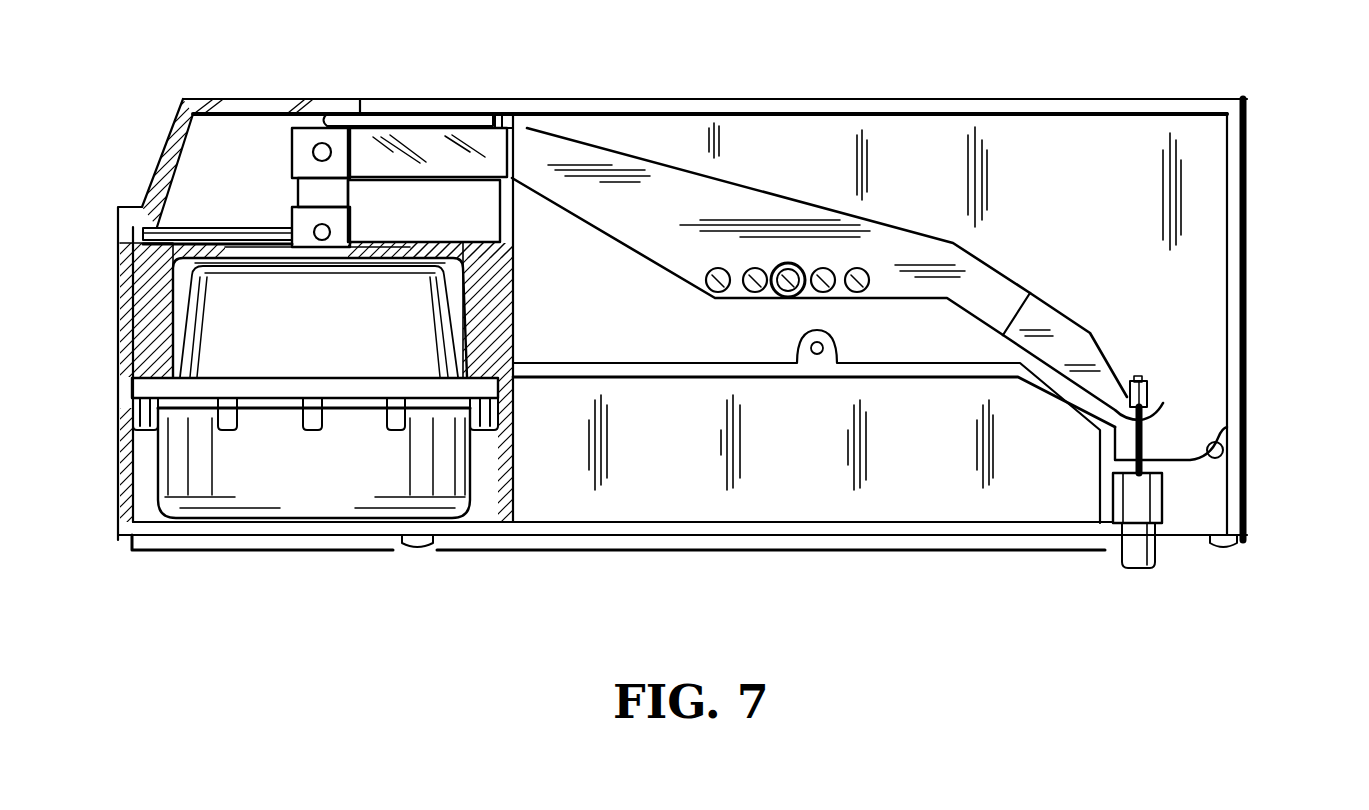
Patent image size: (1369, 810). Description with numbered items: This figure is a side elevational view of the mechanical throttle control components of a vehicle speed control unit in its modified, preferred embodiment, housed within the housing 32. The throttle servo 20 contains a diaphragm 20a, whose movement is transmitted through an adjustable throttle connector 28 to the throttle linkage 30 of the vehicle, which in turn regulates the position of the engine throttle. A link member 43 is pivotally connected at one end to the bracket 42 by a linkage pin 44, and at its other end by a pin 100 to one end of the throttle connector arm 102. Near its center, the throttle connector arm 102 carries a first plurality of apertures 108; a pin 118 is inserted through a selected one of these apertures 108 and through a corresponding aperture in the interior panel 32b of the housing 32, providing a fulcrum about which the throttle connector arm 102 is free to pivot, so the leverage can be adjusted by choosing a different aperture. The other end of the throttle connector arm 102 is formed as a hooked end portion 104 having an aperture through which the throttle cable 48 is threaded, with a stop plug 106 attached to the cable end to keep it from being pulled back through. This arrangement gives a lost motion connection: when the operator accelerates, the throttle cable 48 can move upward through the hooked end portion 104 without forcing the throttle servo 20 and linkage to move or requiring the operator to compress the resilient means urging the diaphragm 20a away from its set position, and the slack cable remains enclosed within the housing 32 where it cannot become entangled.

The throttle servo 20 is at (297, 478).
The diaphragm 20a is at (330, 322).
The adjustable throttle connector 28 is at (791, 170).
The throttle linkage 30 is at (1163, 513).
The housing 32 is at (1252, 238).
The interior panel 32b is at (1020, 153).
The bracket 42 is at (298, 215).
The link member 43 is at (333, 188).
The linkage pin 44 is at (330, 234).
The throttle cable 48 is at (1147, 452).
The pin 100 is at (305, 153).
The throttle connector arm 102 is at (647, 232).
The hooked end portion 104 is at (1072, 340).
The stop plug 106 is at (1152, 390).
The first plurality of apertures 108 is at (727, 297).
The pin 118 is at (797, 292).